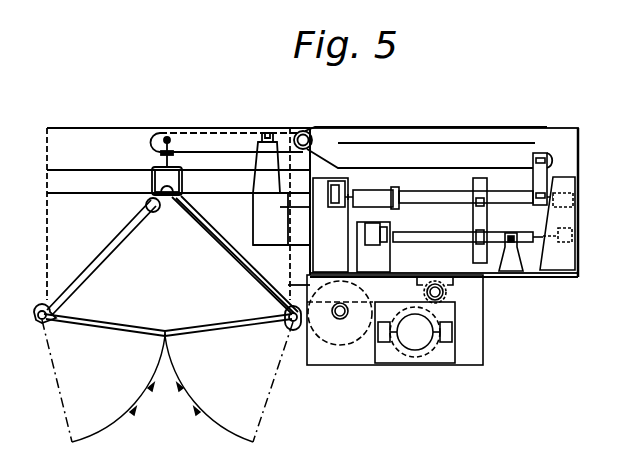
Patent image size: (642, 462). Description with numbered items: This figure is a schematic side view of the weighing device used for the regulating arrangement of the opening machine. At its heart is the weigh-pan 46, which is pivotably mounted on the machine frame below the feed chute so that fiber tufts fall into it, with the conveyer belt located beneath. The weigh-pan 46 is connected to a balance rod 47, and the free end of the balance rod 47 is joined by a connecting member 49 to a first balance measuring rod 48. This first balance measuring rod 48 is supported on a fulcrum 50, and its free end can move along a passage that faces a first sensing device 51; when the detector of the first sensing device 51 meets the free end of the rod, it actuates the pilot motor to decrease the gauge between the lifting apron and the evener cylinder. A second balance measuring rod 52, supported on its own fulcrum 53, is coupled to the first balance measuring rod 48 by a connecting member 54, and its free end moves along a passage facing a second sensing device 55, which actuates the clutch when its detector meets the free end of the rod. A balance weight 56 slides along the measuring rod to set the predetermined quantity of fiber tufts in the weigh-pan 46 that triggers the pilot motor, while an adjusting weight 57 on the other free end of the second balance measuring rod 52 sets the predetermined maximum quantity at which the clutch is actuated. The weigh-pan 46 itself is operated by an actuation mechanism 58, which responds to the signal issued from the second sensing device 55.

The weigh-pan 46 is at (210, 310).
The balance rod 47 is at (367, 155).
The first balance measuring rod 48 is at (443, 190).
The connecting member 49 is at (543, 170).
The fulcrum 50 is at (575, 197).
The first sensing device 51 is at (335, 183).
The second balance measuring rod 52 is at (455, 238).
The fulcrum 53 is at (517, 225).
The connecting member 54 is at (483, 220).
The second sensing device 55 is at (390, 233).
The balance weight 56 is at (395, 205).
The adjusting weight 57 is at (573, 236).
The actuation mechanism 58 is at (395, 355).